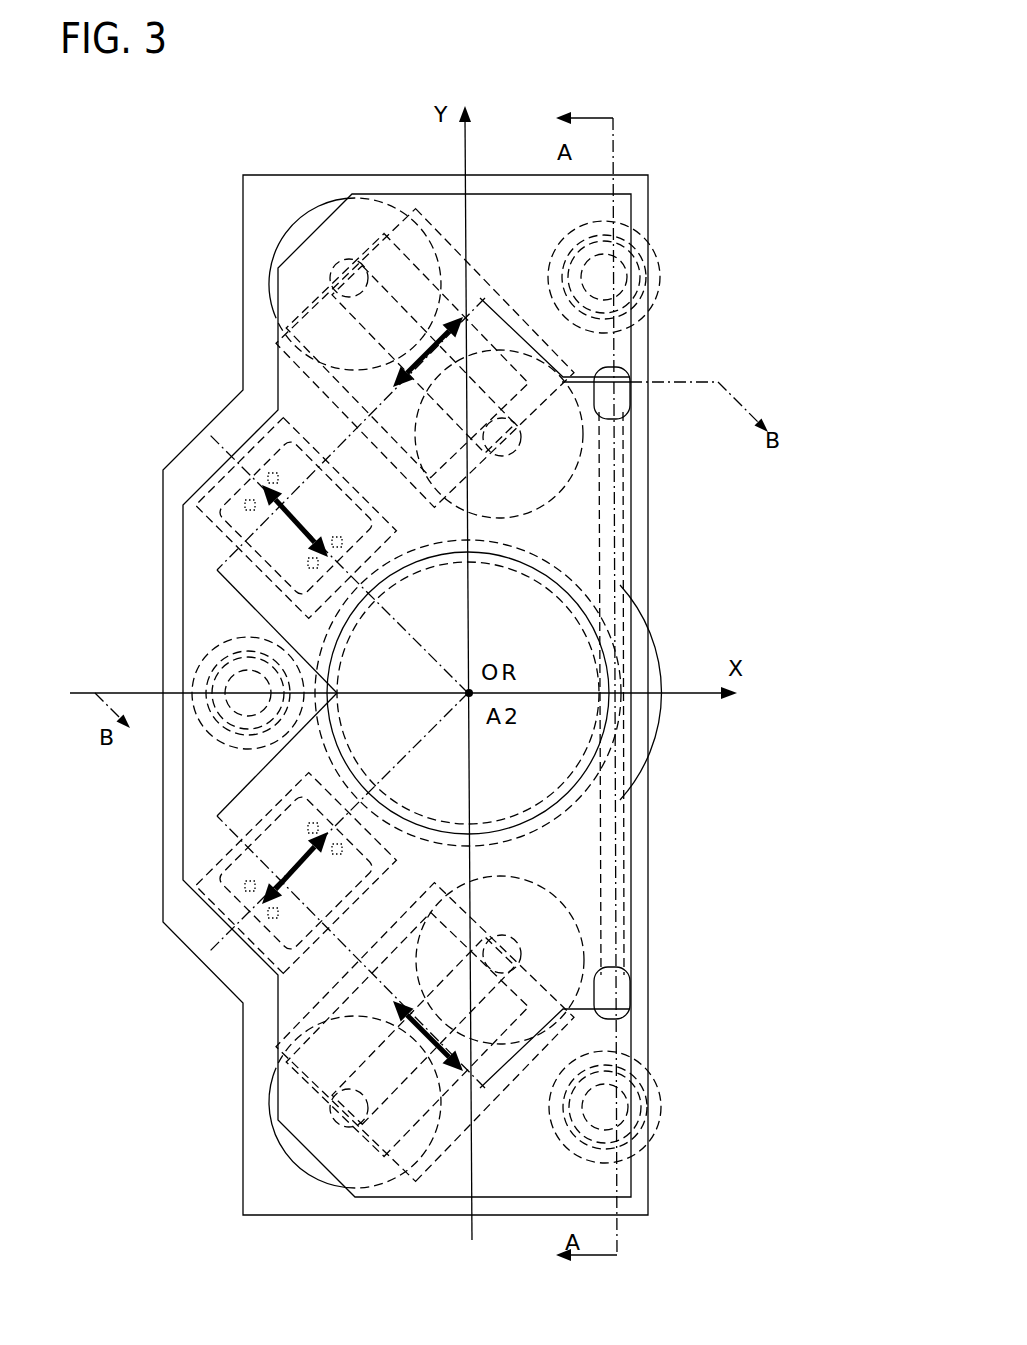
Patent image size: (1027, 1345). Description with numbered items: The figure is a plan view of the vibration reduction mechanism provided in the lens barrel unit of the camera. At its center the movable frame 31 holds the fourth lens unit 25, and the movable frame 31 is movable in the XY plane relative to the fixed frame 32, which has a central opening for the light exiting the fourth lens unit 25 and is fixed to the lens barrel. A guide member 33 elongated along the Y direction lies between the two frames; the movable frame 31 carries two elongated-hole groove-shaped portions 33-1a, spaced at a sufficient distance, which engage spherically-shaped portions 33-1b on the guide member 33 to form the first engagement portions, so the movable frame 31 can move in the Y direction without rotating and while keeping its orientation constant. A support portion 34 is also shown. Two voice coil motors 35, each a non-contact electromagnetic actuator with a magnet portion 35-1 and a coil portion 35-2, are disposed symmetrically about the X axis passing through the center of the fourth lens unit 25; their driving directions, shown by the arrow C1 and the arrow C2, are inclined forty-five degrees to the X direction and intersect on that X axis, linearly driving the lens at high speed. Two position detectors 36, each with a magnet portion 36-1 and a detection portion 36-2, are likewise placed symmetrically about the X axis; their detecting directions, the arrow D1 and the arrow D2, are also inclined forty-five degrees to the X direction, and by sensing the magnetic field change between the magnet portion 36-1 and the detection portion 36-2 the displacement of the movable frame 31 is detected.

The fourth lens unit 25 is at (570, 725).
The movable frame 31 is at (285, 380).
The fixed frame 32 is at (245, 195).
The guide member 33 is at (608, 522).
The groove-shaped portion 33-1a is at (612, 363).
The spherically-shaped portion 33-1b is at (612, 397).
The support portion 34 is at (590, 276).
The voice coil motor 35 is at (131, 212).
The magnet portion 35-1 is at (299, 240).
The coil portion 35-2 is at (332, 323).
The position detector 36 is at (68, 560).
The magnet portion 36-1 is at (285, 540).
The detection portion 36-2 is at (243, 527).
The arrow C1 is at (397, 352).
The arrow C2 is at (395, 1033).
The arrow D1 is at (285, 517).
The arrow D2 is at (262, 888).